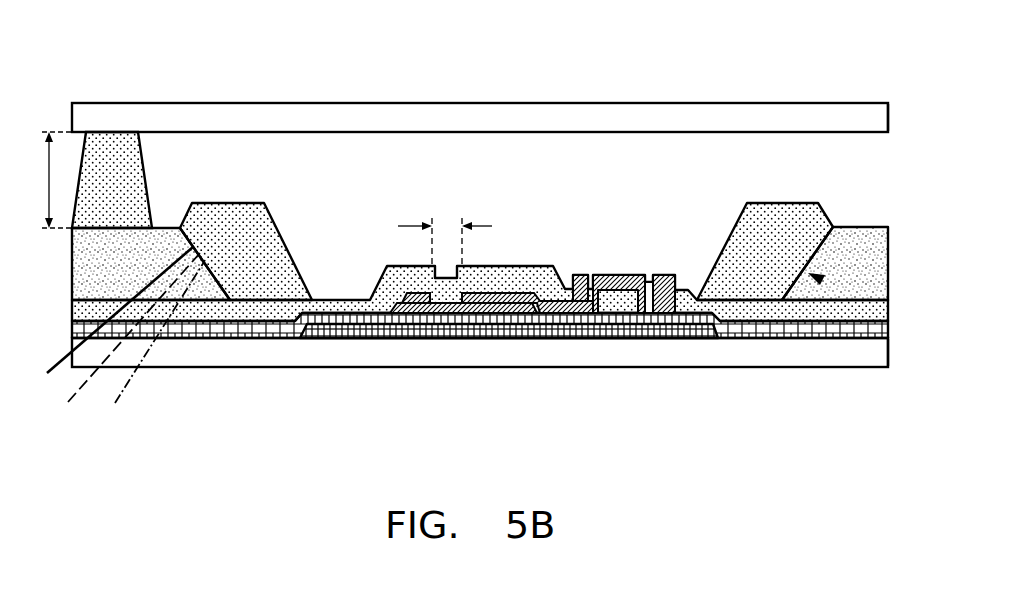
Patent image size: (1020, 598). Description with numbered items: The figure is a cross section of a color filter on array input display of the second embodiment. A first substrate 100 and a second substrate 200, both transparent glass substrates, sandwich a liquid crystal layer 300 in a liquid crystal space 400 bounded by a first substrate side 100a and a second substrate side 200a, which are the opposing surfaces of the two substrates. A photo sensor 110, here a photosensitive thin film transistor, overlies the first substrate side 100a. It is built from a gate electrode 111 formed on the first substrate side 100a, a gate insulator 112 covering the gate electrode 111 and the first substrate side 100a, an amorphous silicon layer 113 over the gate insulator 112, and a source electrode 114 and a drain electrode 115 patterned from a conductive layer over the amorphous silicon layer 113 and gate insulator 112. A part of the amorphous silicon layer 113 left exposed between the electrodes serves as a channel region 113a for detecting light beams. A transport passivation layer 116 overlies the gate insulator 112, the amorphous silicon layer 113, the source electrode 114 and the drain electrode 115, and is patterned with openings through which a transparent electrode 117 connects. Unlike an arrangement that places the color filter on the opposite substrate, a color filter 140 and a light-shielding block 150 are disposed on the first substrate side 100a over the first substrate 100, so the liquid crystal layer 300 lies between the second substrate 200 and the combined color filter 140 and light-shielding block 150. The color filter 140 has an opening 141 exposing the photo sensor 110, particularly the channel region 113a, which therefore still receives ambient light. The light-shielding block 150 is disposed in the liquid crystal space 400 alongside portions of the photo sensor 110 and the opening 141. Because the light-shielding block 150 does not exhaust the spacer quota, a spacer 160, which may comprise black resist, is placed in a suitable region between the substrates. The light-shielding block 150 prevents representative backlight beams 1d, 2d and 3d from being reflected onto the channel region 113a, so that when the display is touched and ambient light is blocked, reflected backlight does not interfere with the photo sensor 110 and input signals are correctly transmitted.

The first substrate 100 is at (756, 355).
The first substrate side 100a is at (889, 342).
The photo sensor 110 is at (305, 434).
The gate electrode 111 is at (515, 330).
The gate insulator 112 is at (453, 315).
The amorphous silicon layer 113 is at (580, 302).
The channel region 113a is at (445, 228).
The source electrode 114 is at (622, 283).
The drain electrode 115 is at (375, 333).
The transport passivation layer 116 is at (382, 313).
The transparent electrode 117 is at (665, 292).
The color filter 140 is at (160, 237).
The opening 141 is at (822, 278).
The light-shielding block 150 is at (745, 237).
The spacer 160 is at (110, 145).
The second substrate 200 is at (437, 103).
The second substrate side 200a is at (889, 128).
The liquid crystal layer 300 is at (822, 172).
The liquid crystal space 400 is at (41, 180).
The representative light beam 1d is at (60, 373).
The representative light beam 2d is at (82, 380).
The representative light beam 3d is at (129, 380).